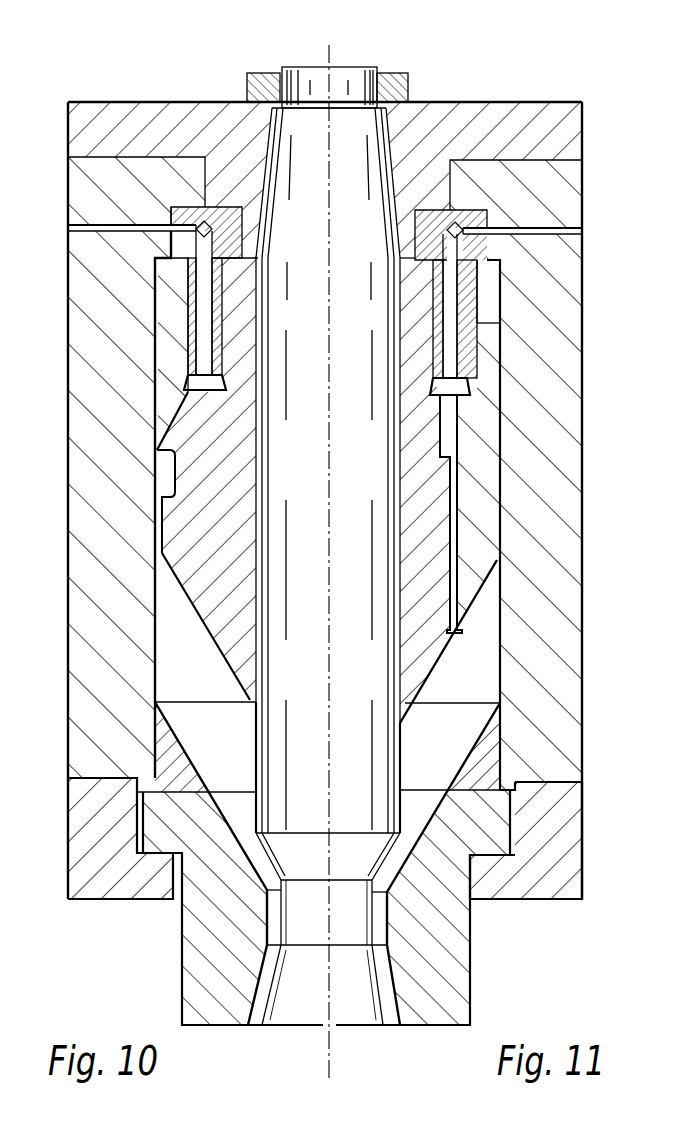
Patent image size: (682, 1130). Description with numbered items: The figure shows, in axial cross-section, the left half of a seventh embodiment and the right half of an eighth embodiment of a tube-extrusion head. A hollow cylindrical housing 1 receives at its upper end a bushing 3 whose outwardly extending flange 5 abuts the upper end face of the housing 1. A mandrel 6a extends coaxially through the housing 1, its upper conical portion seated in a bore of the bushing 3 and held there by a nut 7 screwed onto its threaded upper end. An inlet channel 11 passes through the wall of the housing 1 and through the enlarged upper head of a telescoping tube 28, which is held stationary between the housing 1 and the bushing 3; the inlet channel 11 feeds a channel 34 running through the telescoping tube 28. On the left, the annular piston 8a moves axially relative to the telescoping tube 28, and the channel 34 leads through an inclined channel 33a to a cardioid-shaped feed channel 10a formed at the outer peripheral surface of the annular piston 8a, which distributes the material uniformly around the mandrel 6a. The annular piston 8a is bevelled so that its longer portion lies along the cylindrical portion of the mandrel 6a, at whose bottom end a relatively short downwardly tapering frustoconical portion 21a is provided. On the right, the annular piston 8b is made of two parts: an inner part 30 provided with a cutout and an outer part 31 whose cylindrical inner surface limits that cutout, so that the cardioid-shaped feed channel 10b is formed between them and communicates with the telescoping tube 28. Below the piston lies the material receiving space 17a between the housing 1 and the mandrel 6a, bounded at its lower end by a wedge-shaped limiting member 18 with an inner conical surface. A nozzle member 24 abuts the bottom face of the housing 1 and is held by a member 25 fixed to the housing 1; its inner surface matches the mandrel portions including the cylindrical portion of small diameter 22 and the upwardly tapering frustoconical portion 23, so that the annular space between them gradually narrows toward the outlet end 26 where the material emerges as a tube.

In FIG. 10, the housing 1 is at (136, 500).
In FIG. 11, the bushing 3 is at (440, 186).
In FIG. 11, the flange 5 is at (545, 102).
In FIG. 10, the nut 7 is at (377, 70).
In FIG. 10, the inlet channel 11 is at (68, 229).
In FIG. 11, the inlet channel 11 is at (582, 230).
In FIG. 10, the telescoping tube 28 is at (200, 222).
In FIG. 11, the telescoping tube 28 is at (432, 218).
In FIG. 10, the channel 34 is at (205, 300).
In FIG. 11, the channel 34 is at (445, 310).
In FIG. 10, the annular piston 8a is at (178, 345).
In FIG. 11, the annular piston 8b is at (480, 402).
In FIG. 10, the cardioid-shaped feed channel 10a is at (131, 501).
In FIG. 11, the cardioid-shaped feed channel 10b is at (455, 500).
In FIG. 10, the inclined channel 33a is at (172, 480).
In FIG. 10, the mandrel 6a is at (278, 470).
In FIG. 11, the mandrel 6a is at (378, 451).
In FIG. 10, the material receiving space 17a is at (205, 675).
In FIG. 10, the limiting member 18 is at (178, 742).
In FIG. 10, the member 25 is at (78, 842).
In FIG. 11, the member 25 is at (526, 840).
In FIG. 10, the nozzle member 24 is at (190, 976).
In FIG. 11, the nozzle member 24 is at (423, 864).
In FIG. 10, the downwardly tapering frustoconical portion 21a is at (292, 856).
In FIG. 11, the downwardly tapering frustoconical portion 21a is at (364, 856).
In FIG. 10, the cylindrical portion of small diameter 22 is at (298, 912).
In FIG. 11, the cylindrical portion of small diameter 22 is at (358, 912).
In FIG. 10, the upwardly tapering frustoconical portion 23 is at (285, 985).
In FIG. 11, the upwardly tapering frustoconical portion 23 is at (362, 985).
In FIG. 10, the outlet end 26 is at (256, 1033).
In FIG. 11, the inner part 30 is at (448, 490).
In FIG. 11, the outer part 31 is at (470, 600).